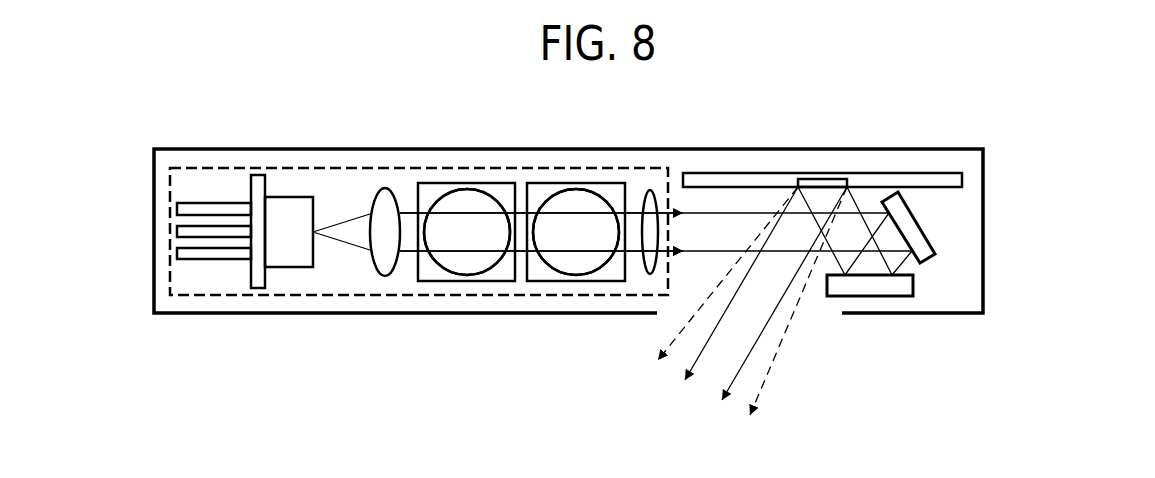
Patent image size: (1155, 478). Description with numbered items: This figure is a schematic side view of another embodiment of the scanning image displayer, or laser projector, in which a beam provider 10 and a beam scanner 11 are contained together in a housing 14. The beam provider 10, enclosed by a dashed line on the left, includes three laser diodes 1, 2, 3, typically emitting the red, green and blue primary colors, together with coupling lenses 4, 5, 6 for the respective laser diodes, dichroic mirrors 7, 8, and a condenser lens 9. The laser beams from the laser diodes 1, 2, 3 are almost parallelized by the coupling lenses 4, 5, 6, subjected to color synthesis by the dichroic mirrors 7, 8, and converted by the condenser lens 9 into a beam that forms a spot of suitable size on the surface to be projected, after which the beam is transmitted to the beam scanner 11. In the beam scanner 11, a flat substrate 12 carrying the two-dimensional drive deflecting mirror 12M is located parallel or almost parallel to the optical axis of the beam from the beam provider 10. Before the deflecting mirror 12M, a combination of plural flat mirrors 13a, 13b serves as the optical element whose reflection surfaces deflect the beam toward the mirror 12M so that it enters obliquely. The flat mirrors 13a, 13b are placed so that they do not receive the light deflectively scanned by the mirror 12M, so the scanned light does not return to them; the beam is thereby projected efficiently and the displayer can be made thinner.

The laser diode 1 is at (287, 268).
The laser diode 2 is at (467, 187).
The laser diode 3 is at (577, 187).
The coupling lens 4 is at (380, 277).
The coupling lens 5 is at (467, 232).
The coupling lens 6 is at (576, 232).
The dichroic mirror 7 is at (440, 281).
The dichroic mirror 8 is at (548, 281).
The condenser lens 9 is at (648, 189).
The beam provider 10 is at (354, 166).
The beam scanner 11 is at (949, 246).
The flat substrate 12 is at (907, 173).
The deflecting mirror 12M is at (822, 178).
The flat mirror 13a is at (913, 212).
The flat mirror 13b is at (913, 287).
The housing 14 is at (890, 313).